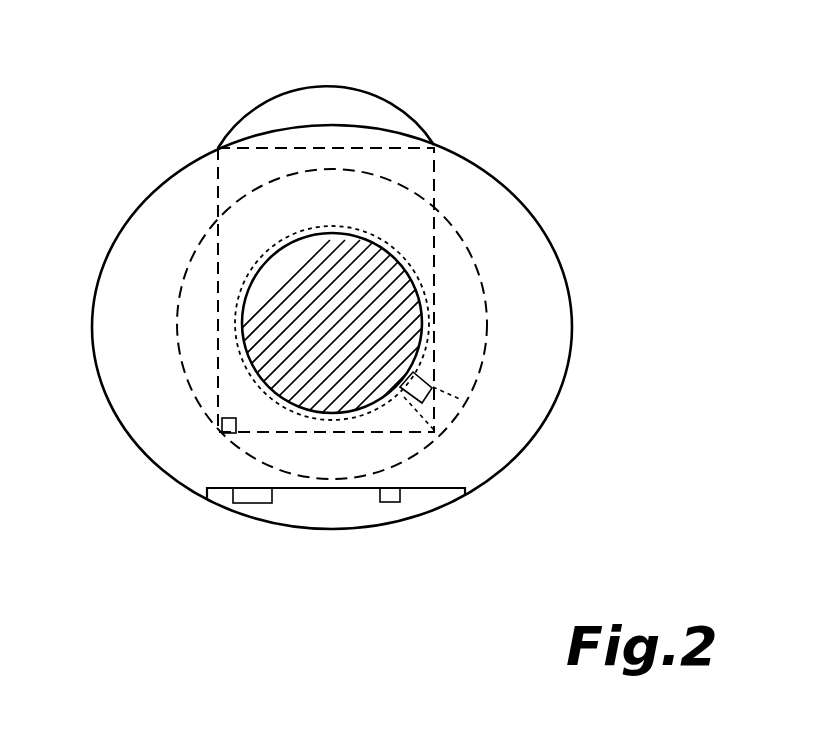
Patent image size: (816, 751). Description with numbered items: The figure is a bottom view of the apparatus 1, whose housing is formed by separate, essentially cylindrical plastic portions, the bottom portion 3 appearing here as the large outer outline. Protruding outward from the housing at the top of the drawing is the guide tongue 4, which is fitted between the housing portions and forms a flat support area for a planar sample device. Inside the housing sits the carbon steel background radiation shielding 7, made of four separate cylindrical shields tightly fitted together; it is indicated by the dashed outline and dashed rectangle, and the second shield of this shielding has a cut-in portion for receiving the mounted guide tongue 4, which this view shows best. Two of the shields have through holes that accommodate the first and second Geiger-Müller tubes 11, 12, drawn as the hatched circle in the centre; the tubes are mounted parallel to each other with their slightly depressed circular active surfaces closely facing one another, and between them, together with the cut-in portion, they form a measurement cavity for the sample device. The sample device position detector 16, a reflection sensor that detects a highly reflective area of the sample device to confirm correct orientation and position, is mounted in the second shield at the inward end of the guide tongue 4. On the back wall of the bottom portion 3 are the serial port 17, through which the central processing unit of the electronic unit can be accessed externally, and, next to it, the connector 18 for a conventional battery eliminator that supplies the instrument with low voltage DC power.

The apparatus 1 is at (363, 343).
The bottom portion 3 is at (535, 396).
The guide tongue 4 is at (380, 117).
The background radiation shielding 7 is at (452, 229).
The first Geiger-Müller tube 11 is at (419, 328).
The second Geiger-Müller tube 12 is at (393, 289).
The sample device position detector 16 is at (222, 426).
The serial port 17 is at (257, 496).
The connector 18 is at (395, 502).